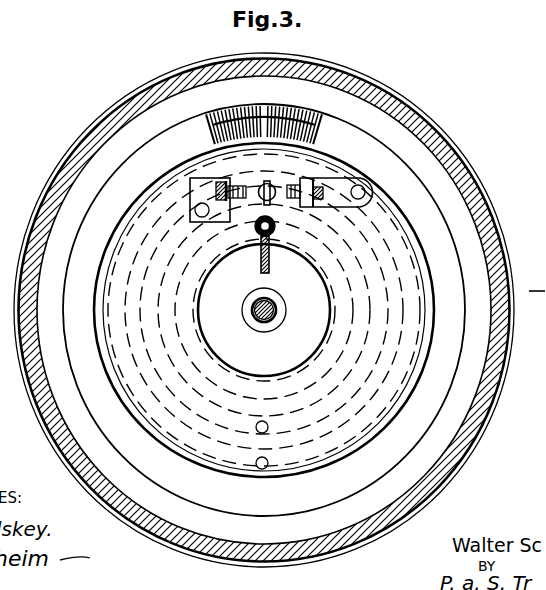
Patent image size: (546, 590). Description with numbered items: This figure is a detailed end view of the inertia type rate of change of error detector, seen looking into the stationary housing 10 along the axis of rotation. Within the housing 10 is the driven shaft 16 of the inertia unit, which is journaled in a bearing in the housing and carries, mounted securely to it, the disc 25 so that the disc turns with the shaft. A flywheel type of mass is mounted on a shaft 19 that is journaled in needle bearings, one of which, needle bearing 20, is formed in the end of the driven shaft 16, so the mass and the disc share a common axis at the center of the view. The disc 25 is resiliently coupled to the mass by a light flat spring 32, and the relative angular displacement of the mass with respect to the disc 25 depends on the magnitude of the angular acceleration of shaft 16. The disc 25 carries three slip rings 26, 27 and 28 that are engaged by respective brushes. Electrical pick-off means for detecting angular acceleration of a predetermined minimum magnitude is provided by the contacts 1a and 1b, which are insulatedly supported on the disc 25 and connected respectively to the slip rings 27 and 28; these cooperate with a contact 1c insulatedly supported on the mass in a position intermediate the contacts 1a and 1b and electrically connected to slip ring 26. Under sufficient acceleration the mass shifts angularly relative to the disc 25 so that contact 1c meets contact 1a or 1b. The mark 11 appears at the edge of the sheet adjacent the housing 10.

The stationary housing 10 is at (58, 175).
The disc 25 is at (176, 125).
The light flat spring 32 is at (265, 140).
The slip ring 28 is at (431, 317).
The slip ring 27 is at (333, 341).
The slip ring 26 is at (329, 297).
The driven shaft 16 is at (256, 320).
The needle bearing 20 is at (256, 300).
The shaft 19 is at (254, 309).
The contact 1a is at (231, 166).
The contact 1c is at (270, 181).
The contact 1b is at (302, 178).
The section mark 11 is at (537, 282).